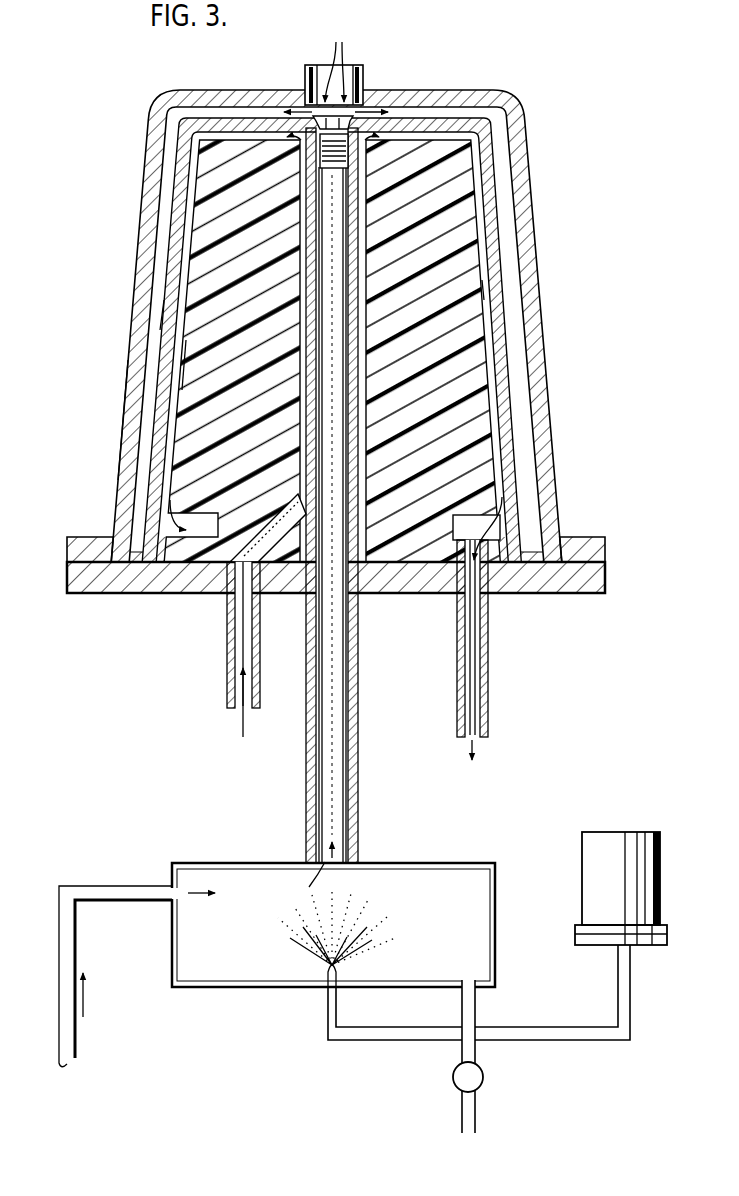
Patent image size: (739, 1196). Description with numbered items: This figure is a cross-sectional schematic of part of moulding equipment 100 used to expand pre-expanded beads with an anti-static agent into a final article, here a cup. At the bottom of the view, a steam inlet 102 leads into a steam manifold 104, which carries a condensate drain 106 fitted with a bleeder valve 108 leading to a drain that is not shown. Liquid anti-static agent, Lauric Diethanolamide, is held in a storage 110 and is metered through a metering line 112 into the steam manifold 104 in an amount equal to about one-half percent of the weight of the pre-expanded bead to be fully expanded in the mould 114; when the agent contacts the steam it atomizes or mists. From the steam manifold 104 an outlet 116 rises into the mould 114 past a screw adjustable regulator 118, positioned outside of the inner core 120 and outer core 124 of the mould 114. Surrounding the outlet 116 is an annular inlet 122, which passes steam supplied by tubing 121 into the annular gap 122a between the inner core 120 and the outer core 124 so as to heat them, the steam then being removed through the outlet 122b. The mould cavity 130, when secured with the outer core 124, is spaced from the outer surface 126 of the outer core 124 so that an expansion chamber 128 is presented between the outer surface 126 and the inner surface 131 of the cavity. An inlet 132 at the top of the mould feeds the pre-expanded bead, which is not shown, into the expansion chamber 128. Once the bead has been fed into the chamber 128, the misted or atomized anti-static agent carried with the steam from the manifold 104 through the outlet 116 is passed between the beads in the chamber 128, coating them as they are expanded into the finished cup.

The moulding equipment 100 is at (132, 87).
The steam inlet 102 is at (112, 886).
The steam manifold 104 is at (437, 862).
The condensate drain 106 is at (476, 1005).
The bleeder valve 108 is at (483, 1077).
The storage 110 is at (605, 838).
The metering line 112 is at (355, 1042).
The mould 114 is at (143, 173).
The outlet 116 is at (307, 772).
The screw adjustable regulator 118 is at (348, 150).
The inner core 120 is at (448, 416).
The tubing 121 is at (227, 647).
The annular inlet 122 is at (365, 508).
The annular gap 122a is at (183, 375).
The outlet 122b is at (490, 683).
The outer core 124 is at (177, 233).
The outer surface 126 is at (168, 313).
The expansion chamber 128 is at (415, 112).
The mould cavity 130 is at (123, 413).
The inner surface 131 is at (140, 481).
The inlet 132 is at (305, 80).